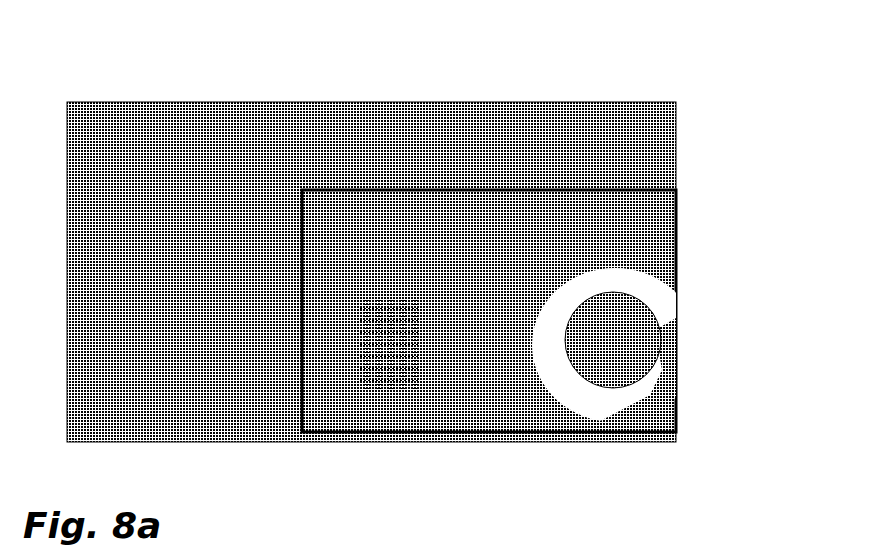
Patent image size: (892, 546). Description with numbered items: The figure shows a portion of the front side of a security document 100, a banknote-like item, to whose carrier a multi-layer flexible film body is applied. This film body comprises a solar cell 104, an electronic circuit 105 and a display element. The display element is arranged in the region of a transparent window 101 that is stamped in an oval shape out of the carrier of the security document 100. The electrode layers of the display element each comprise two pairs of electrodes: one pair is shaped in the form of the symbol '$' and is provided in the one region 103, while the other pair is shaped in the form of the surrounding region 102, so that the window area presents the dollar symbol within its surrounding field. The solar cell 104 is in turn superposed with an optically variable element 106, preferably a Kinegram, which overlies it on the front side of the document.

The security document 100 is at (399, 66).
The transparent window 101 is at (600, 407).
The surrounding region 102 is at (657, 345).
The region 103 is at (627, 341).
The solar cell 104 is at (495, 313).
The electronic circuit 105 is at (557, 221).
The optically variable element 106 is at (420, 360).